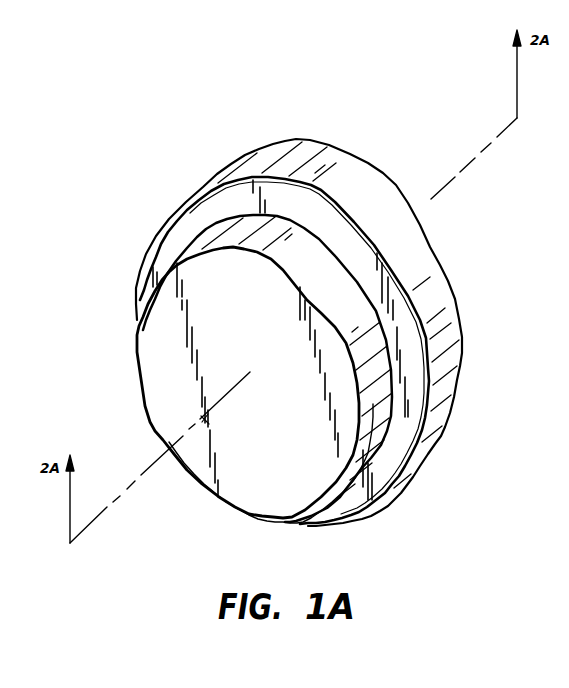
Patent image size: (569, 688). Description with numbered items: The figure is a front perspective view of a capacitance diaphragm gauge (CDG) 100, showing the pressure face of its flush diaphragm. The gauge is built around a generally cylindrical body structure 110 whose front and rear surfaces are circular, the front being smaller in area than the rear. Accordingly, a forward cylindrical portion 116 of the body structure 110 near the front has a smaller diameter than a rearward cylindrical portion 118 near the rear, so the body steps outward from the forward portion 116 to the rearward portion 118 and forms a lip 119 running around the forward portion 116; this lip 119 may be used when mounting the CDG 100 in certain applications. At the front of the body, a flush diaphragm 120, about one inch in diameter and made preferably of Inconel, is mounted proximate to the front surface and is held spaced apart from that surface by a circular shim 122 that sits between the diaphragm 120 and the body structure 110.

The capacitance diaphragm gauge 100 is at (275, 112).
The body structure 110 is at (425, 258).
The forward cylindrical portion 116 is at (377, 413).
The rearward cylindrical portion 118 is at (443, 320).
The lip 119 is at (393, 450).
The flush diaphragm 120 is at (254, 490).
The circular shim 122 is at (360, 478).